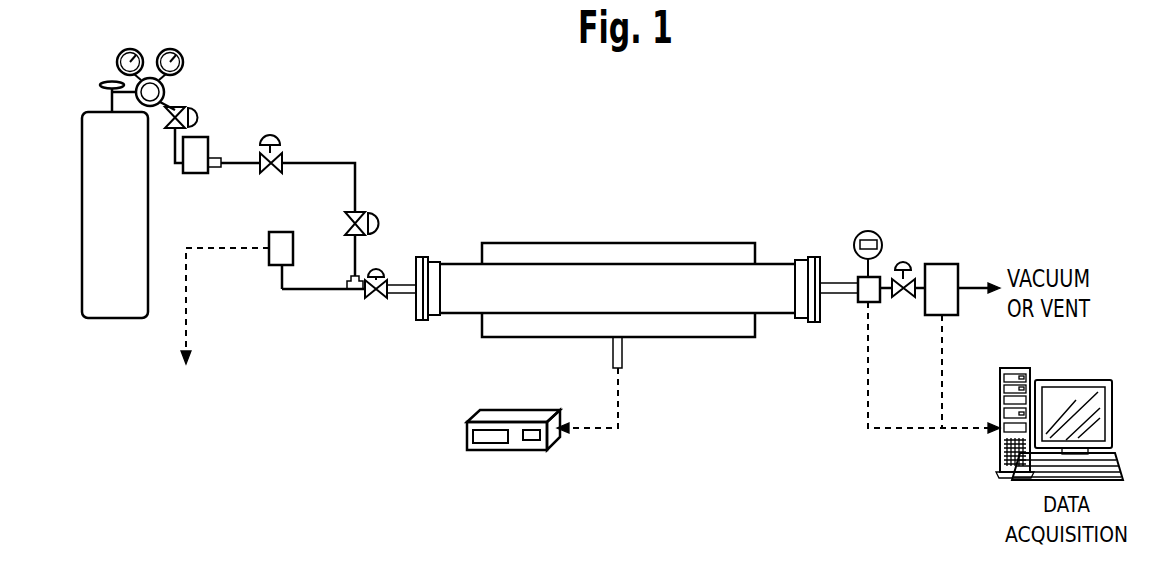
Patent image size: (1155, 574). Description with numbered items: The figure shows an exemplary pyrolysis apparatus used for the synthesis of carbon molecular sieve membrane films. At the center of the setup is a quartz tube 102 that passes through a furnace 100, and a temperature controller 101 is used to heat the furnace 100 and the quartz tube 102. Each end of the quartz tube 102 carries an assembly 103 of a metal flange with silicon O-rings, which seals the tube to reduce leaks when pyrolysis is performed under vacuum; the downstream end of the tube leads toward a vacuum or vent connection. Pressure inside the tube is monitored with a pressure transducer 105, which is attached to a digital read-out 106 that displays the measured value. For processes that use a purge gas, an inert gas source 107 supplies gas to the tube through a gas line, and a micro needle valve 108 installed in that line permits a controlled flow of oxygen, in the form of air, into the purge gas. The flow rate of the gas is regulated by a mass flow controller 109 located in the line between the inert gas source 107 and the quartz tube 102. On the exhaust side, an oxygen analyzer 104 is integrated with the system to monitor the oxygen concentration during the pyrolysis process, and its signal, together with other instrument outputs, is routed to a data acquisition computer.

The furnace 100 is at (630, 243).
The temperature controller 101 is at (530, 452).
The quartz tube 102 is at (698, 277).
The assembly of a metal flange with silicon O-rings 103 is at (416, 322).
The oxygen analyzer 104 is at (943, 264).
The pressure transducer 105 is at (275, 267).
The digital read-out 106 is at (190, 360).
The inert gas source 107 is at (110, 320).
The micro needle valve 108 is at (282, 139).
The mass flow controller 109 is at (208, 145).